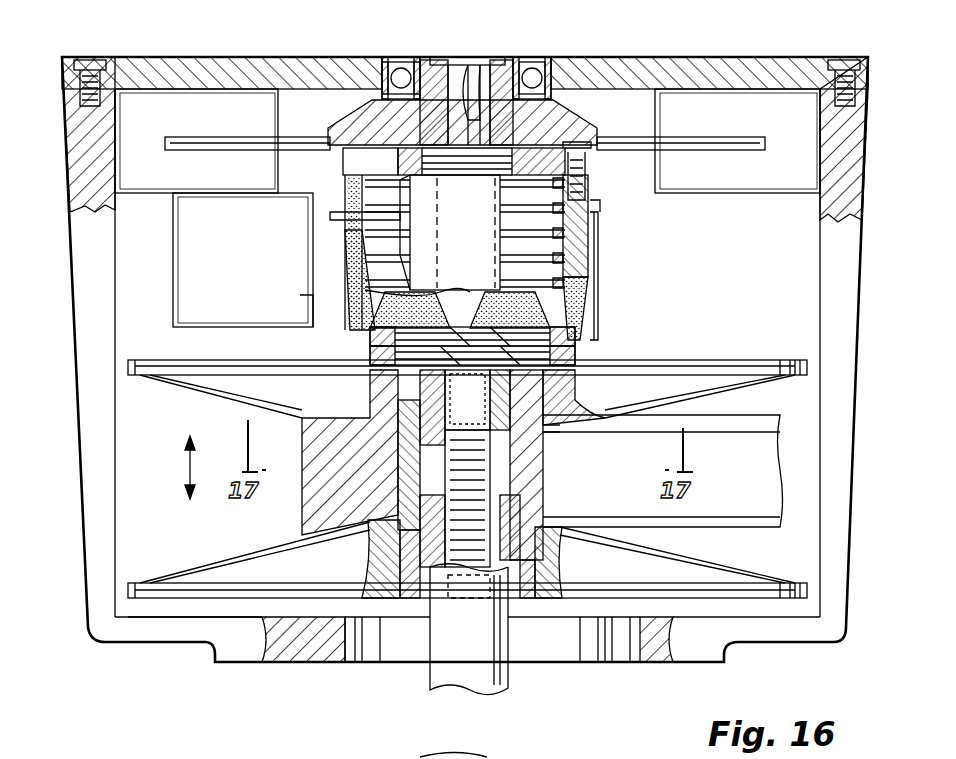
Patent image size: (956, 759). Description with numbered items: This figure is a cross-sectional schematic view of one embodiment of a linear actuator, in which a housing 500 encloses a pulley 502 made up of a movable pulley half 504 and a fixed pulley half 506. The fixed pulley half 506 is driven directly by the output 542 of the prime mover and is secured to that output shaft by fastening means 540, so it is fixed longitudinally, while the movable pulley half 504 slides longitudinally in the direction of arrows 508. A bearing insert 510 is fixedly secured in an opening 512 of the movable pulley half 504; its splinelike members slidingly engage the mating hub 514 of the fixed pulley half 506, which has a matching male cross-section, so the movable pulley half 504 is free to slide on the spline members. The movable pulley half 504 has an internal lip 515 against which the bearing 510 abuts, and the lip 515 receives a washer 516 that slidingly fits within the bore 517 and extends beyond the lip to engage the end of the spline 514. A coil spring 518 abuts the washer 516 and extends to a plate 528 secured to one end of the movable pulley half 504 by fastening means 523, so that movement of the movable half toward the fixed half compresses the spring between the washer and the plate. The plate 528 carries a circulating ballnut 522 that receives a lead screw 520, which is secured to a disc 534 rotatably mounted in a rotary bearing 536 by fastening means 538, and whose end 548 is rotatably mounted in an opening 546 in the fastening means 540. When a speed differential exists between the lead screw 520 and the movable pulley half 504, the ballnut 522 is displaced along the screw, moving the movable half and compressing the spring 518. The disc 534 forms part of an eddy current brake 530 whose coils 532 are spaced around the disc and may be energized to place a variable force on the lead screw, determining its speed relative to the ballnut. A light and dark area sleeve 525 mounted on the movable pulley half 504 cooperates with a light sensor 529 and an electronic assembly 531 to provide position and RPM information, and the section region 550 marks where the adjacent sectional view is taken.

The housing 500 is at (832, 190).
The pulley 502 is at (147, 466).
The movable pulley half 504 is at (740, 378).
The fixed pulley half 506 is at (745, 572).
The arrows 508 is at (192, 466).
The bearing insert 510 is at (562, 432).
The opening 512 is at (580, 405).
The mating hub 514 is at (545, 482).
The internal lip 515 is at (585, 360).
The washer 516 is at (582, 345).
The bore 517 is at (585, 330).
The coil spring 518 is at (575, 278).
The lead screw 520 is at (338, 356).
The circulating ballnut 522 is at (590, 250).
The fastening means 523 is at (590, 178).
The light and dark area sleeve 525 is at (598, 240).
The plate 528 is at (348, 158).
The light sensor 529 is at (312, 283).
The eddy current brake 530 is at (238, 118).
The electronic assembly 531 is at (180, 295).
The coils 532 is at (692, 112).
The disc 534 is at (575, 122).
The rotary bearing 536 is at (522, 58).
The fastening means 538 is at (378, 92).
The fastening means 540 is at (510, 512).
The output 542 is at (445, 675).
The opening 546 is at (398, 388).
The end 548 is at (467, 400).
The shelf member 550 is at (663, 471).